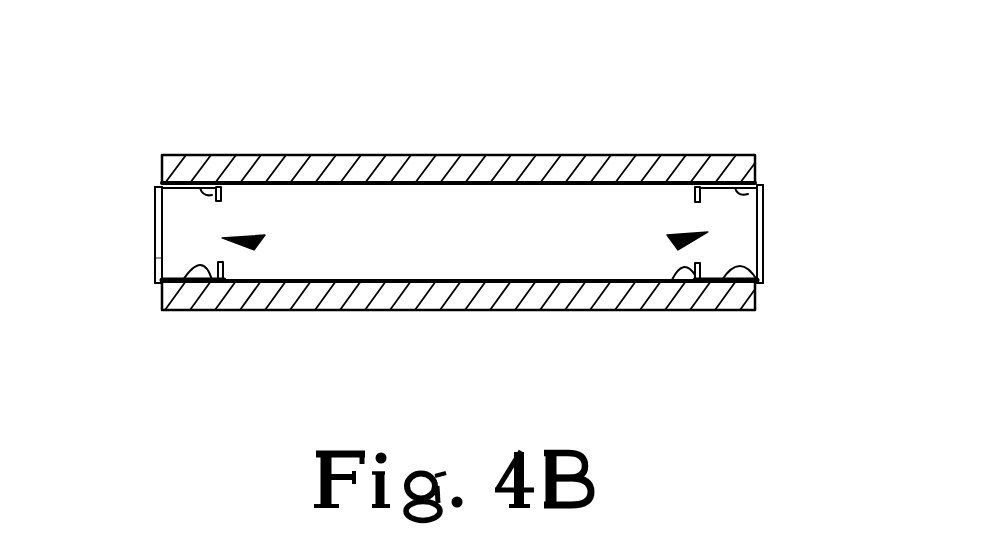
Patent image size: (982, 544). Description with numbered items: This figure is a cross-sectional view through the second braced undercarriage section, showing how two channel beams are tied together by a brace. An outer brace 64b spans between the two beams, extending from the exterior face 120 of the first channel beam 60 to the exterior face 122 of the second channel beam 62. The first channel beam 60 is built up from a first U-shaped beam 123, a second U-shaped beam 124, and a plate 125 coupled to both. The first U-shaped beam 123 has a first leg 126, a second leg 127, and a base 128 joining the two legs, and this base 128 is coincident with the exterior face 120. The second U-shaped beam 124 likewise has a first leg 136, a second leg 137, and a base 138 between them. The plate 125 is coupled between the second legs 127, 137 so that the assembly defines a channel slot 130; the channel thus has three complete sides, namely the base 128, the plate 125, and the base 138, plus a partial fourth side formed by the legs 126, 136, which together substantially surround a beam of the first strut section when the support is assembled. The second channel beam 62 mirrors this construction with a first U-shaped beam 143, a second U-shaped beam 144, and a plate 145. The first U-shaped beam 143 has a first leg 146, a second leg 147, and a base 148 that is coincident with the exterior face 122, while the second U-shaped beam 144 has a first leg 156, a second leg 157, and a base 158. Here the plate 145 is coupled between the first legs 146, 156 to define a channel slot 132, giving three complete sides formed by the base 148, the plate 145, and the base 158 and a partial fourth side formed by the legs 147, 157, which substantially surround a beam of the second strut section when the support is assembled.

The first channel beam 60 is at (767, 232).
The second channel beam 62 is at (150, 230).
The outer brace 64b is at (447, 155).
The exterior face 120 is at (722, 155).
The exterior face 122 is at (200, 156).
The first U-shaped beam 123 is at (695, 190).
The second U-shaped beam 124 is at (760, 284).
The plate 125 is at (768, 212).
The first leg 126 is at (693, 195).
The second leg 127 is at (728, 208).
The base 128 is at (758, 183).
The channel slot 130 is at (680, 243).
The channel slot 132 is at (255, 245).
The first leg 136 is at (688, 264).
The second leg 137 is at (733, 245).
The base 138 is at (754, 283).
The first U-shaped beam 143 is at (160, 186).
The second U-shaped beam 144 is at (160, 283).
The plate 145 is at (152, 258).
The first leg 146 is at (163, 203).
The second leg 147 is at (222, 200).
The base 148 is at (218, 186).
The first leg 156 is at (178, 246).
The second leg 157 is at (223, 263).
The base 158 is at (201, 263).